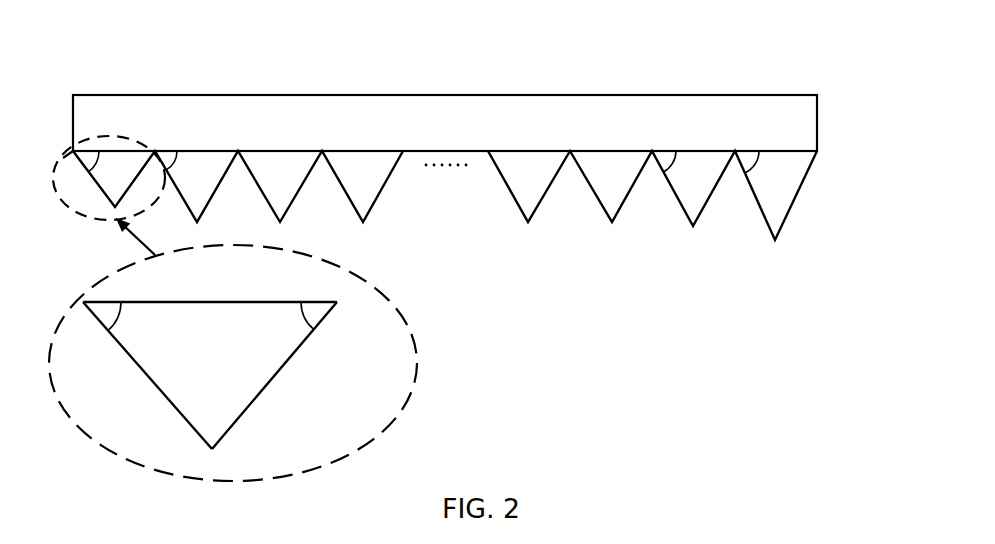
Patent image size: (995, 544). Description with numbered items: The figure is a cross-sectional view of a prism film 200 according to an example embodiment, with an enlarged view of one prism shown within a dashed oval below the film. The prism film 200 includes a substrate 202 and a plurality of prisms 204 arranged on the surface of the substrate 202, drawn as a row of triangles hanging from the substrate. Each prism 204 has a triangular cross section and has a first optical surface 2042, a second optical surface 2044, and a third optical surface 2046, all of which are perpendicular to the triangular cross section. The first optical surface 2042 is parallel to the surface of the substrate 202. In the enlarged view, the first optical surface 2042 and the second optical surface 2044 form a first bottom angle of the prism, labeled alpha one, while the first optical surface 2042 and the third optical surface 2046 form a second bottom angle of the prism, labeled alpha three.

The prism film 200 is at (127, 75).
The substrate 202 is at (737, 100).
The prism 204 is at (800, 190).
The first optical surface 2042 is at (213, 302).
The second optical surface 2044 is at (138, 363).
The third optical surface 2046 is at (285, 365).